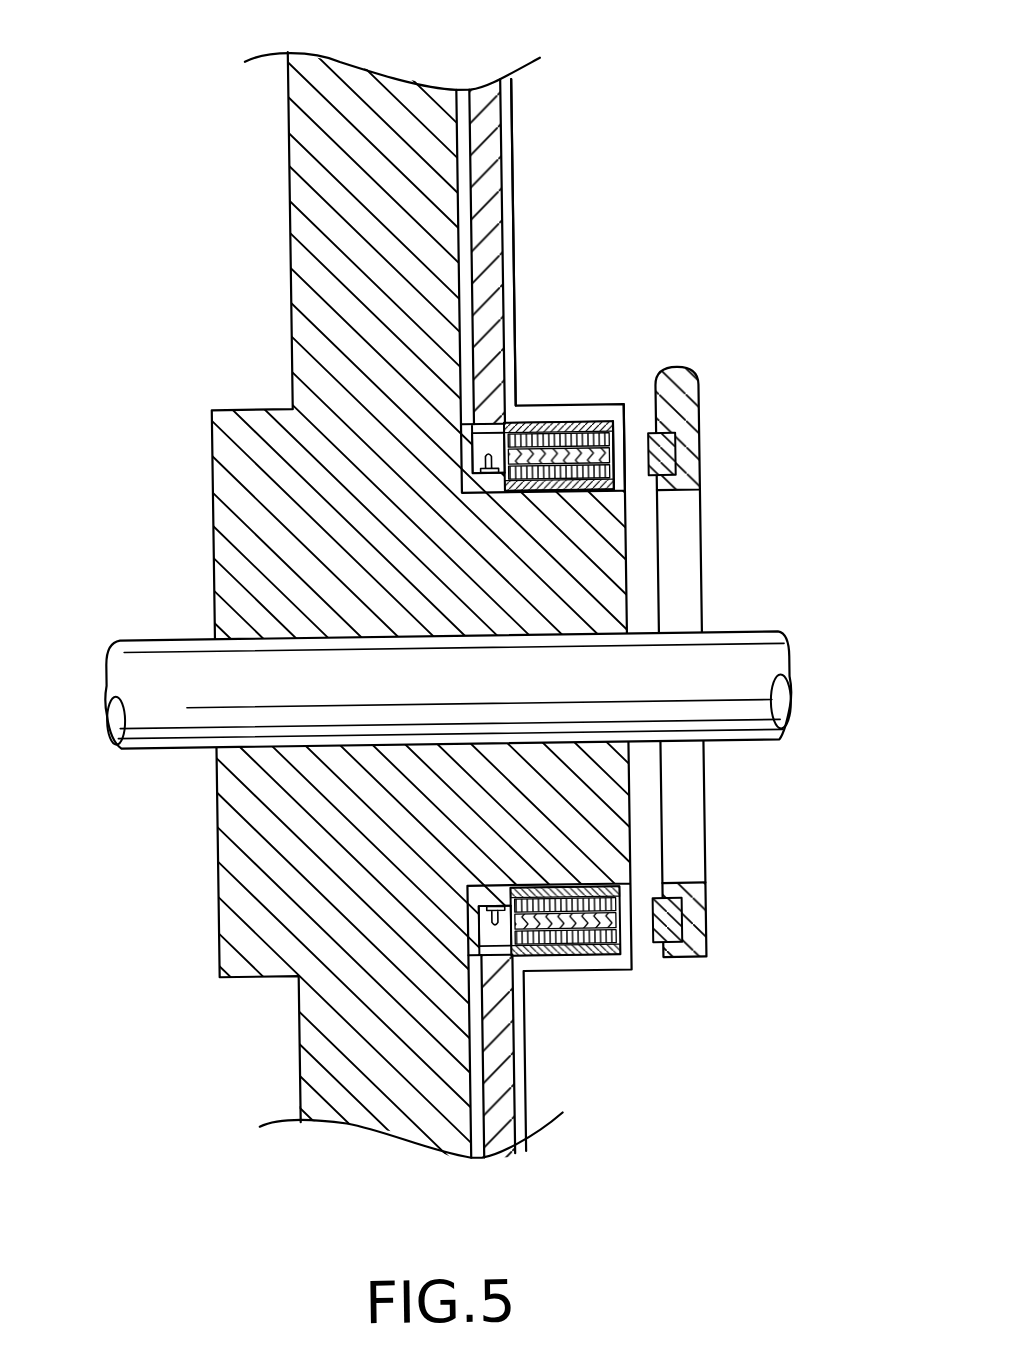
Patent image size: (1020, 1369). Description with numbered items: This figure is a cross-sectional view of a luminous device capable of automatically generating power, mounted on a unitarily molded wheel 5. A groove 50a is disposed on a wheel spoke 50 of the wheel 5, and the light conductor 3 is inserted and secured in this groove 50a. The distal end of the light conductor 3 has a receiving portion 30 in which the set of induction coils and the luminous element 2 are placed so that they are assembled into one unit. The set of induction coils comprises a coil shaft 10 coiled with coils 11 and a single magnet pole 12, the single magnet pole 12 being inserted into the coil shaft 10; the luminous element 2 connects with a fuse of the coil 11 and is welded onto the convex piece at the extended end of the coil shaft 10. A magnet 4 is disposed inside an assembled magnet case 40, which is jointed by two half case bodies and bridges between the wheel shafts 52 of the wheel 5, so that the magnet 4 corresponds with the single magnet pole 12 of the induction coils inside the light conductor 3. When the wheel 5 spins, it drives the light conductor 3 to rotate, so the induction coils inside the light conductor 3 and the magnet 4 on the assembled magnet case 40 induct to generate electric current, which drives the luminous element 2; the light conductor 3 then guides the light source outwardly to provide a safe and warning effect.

The wheel 5 is at (210, 259).
The wheel spoke 50 is at (307, 150).
The groove 50a is at (519, 134).
The light conductor 3 is at (486, 107).
The receiving portion 30 is at (483, 440).
The luminous element 2 is at (493, 449).
The coils 11 is at (538, 446).
The coil shaft 10 is at (603, 434).
The single magnet pole 12 is at (631, 448).
The magnet 4 is at (678, 440).
The assembled magnet case 40 is at (704, 574).
The wheel shafts 52 is at (188, 658).